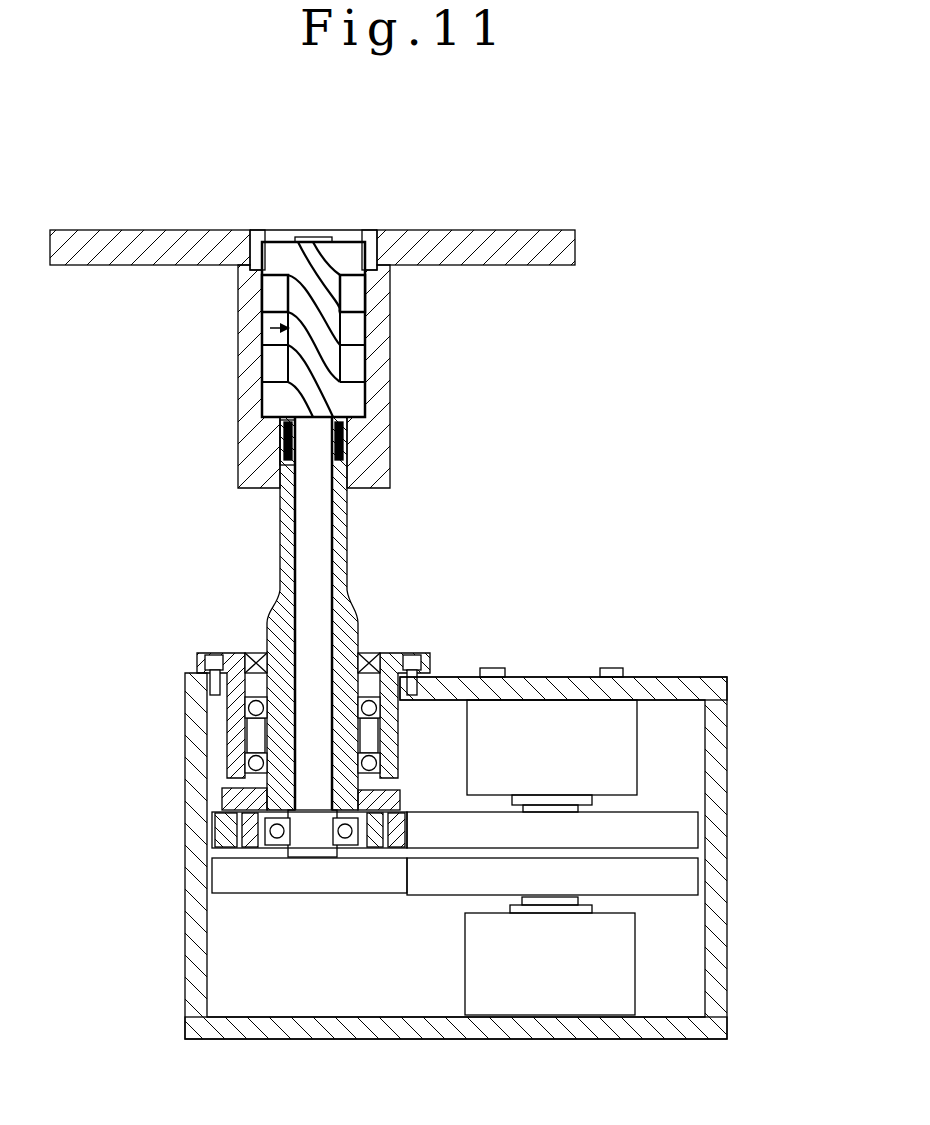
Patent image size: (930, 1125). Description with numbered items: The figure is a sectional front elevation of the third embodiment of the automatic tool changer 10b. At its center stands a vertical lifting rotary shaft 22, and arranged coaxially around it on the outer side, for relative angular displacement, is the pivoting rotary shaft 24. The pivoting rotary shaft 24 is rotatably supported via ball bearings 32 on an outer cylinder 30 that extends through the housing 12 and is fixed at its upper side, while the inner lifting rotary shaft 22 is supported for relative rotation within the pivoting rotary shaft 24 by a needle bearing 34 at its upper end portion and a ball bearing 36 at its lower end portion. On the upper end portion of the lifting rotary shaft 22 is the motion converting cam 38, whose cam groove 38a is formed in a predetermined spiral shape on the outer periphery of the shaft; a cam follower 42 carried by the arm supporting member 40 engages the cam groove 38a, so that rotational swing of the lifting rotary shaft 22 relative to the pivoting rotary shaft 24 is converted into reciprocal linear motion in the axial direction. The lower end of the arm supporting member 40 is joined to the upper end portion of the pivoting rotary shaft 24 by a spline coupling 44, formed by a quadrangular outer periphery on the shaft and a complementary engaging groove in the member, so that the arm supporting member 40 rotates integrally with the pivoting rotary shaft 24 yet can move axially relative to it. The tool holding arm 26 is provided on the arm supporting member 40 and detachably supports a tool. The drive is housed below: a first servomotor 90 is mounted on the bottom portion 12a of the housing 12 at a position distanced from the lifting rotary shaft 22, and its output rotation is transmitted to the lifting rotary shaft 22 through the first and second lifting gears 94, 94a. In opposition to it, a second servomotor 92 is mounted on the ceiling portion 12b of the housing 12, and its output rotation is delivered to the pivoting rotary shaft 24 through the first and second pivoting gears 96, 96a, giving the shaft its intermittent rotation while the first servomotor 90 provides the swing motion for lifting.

The automatic tool changer 10b is at (543, 406).
The housing 12 is at (730, 728).
The bottom portion 12a is at (678, 1012).
The ceiling portion 12b is at (668, 712).
The lifting rotary shaft 22 is at (312, 583).
The pivoting rotary shaft 24 is at (283, 540).
The tool holding arm 26 is at (540, 236).
The outer cylinder 30 is at (400, 725).
The ball bearings 32 is at (250, 762).
The needle bearing 34 is at (283, 442).
The ball bearing 36 is at (222, 835).
The motion converting cam 38 is at (268, 328).
The cam groove 38a is at (328, 278).
The arm supporting member 40 is at (390, 412).
The cam follower 42 is at (272, 296).
The spline coupling 44 is at (345, 452).
The first servomotor 90 is at (567, 1000).
The second servomotor 92 is at (558, 722).
The first lifting gear 94 is at (671, 888).
The second lifting gear 94a is at (212, 875).
The first pivoting gear 96 is at (677, 822).
The second pivoting gear 96a is at (212, 822).